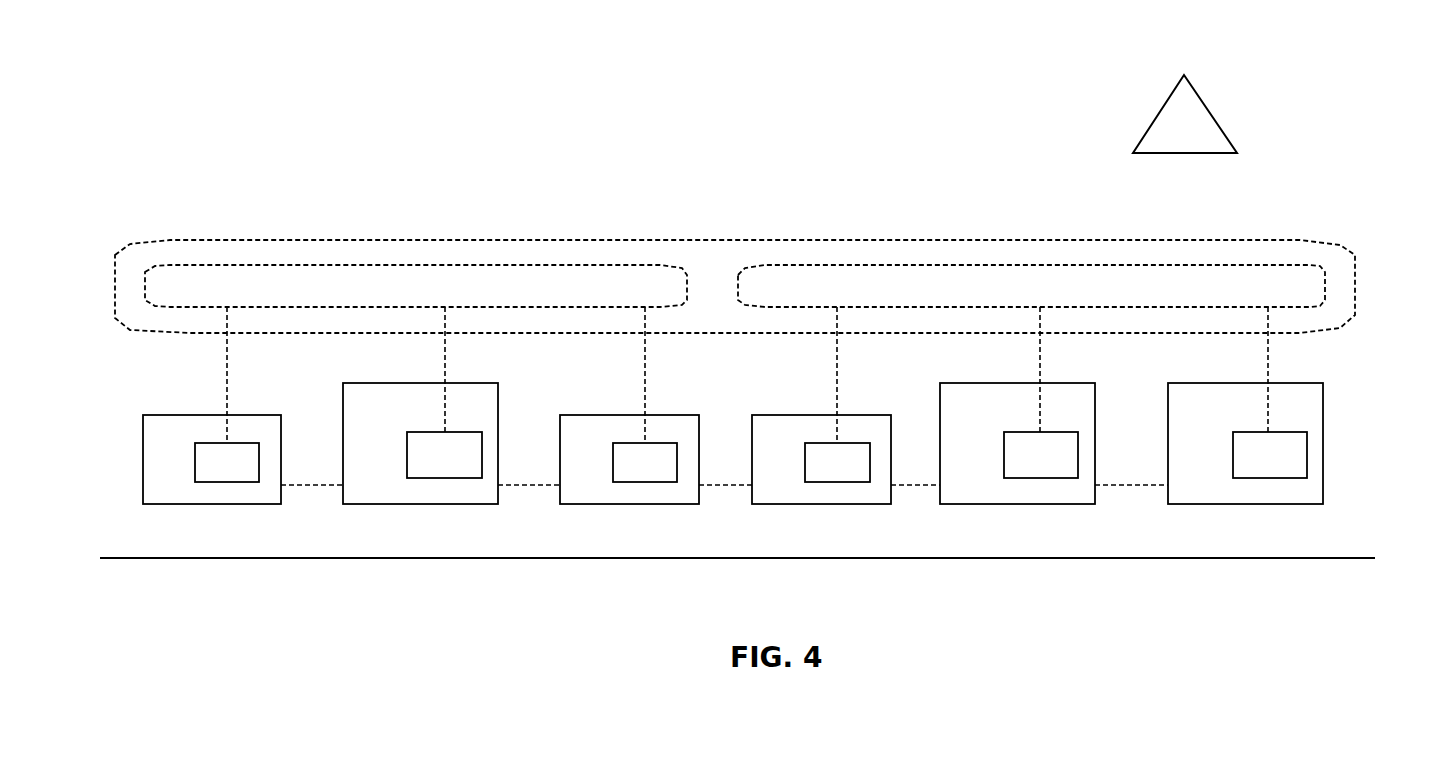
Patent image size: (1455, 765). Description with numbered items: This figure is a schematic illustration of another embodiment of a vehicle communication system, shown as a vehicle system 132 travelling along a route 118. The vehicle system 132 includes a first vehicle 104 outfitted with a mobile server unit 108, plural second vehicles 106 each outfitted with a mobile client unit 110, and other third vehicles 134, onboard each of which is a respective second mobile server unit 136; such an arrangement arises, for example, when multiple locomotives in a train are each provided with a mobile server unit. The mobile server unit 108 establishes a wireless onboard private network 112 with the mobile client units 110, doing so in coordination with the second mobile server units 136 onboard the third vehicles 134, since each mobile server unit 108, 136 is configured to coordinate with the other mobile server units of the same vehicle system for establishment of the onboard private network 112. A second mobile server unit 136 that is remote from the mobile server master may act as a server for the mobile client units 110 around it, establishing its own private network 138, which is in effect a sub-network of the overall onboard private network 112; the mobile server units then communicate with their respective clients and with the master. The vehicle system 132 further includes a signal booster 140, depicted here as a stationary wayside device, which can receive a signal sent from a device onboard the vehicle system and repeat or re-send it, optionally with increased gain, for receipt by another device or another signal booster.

The first vehicle 104 is at (1243, 504).
The second vehicles 106 is at (210, 504).
The mobile server unit 108 is at (1278, 432).
The mobile client units 110 is at (243, 443).
The onboard private network 112 is at (885, 240).
The route 118 is at (1160, 558).
The vehicle system 132 is at (1362, 345).
The third vehicles 134 is at (420, 504).
The second mobile server unit 136 is at (458, 432).
The private network 138 is at (383, 265).
The signal booster 140 is at (1184, 75).